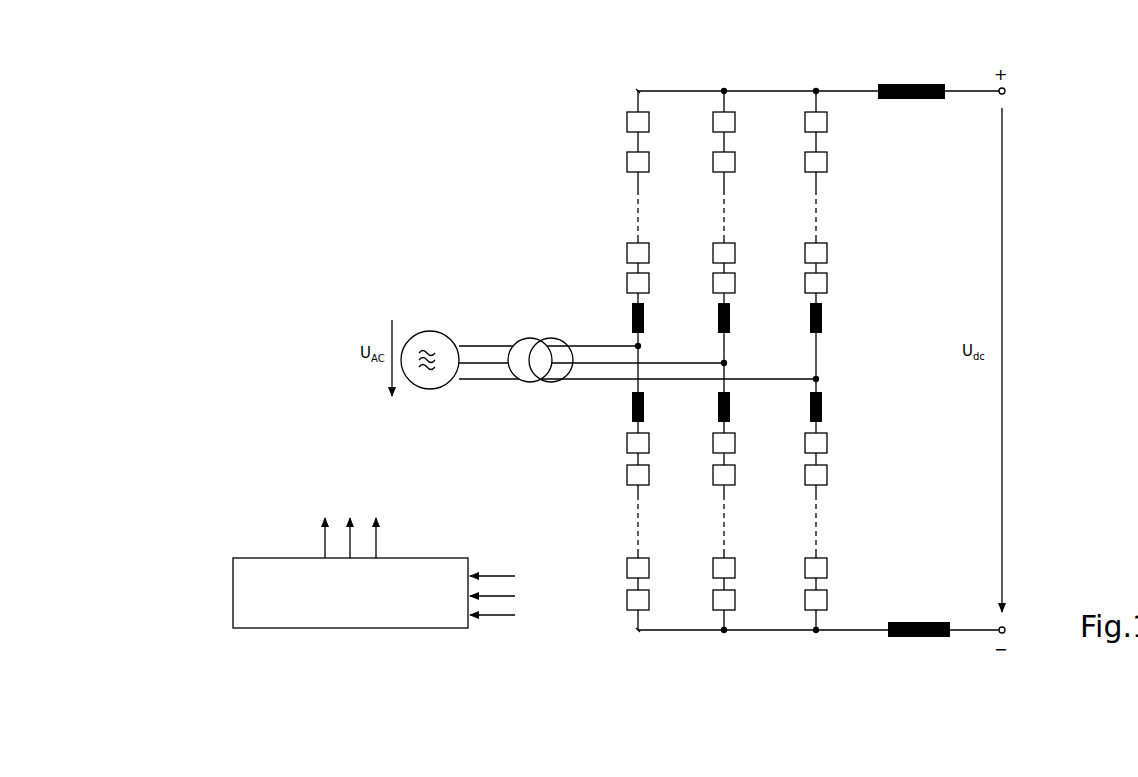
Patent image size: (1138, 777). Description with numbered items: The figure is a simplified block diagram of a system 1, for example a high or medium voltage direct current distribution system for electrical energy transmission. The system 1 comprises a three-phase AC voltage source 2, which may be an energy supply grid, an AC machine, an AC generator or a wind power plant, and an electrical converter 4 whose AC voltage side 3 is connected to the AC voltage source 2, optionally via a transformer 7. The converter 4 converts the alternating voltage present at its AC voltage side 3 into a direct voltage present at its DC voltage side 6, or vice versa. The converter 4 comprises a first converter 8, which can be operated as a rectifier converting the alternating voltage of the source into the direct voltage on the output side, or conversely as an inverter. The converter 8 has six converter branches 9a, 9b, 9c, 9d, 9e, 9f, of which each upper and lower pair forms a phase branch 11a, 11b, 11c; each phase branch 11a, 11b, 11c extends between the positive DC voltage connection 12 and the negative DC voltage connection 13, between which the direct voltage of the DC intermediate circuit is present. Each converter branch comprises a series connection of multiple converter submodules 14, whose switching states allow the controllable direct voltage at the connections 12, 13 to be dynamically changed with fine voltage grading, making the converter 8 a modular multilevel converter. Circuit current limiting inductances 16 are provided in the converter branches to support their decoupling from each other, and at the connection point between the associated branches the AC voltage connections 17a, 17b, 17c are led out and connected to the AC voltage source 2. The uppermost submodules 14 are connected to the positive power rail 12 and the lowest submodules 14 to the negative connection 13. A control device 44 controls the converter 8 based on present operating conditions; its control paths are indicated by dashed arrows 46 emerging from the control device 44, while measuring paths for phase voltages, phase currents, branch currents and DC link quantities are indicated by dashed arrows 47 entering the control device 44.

The system 1 is at (313, 177).
The AC voltage source 2 is at (416, 326).
The AC voltage side 3 is at (574, 284).
The converter 4 is at (598, 93).
The DC voltage side 6 is at (1035, 197).
The transformer 7 is at (530, 386).
The first converter 8 is at (628, 101).
The converter branch 9a is at (641, 100).
The converter branch 9b is at (728, 95).
The converter branch 9c is at (820, 96).
The converter branch 9d is at (727, 631).
The converter branch 9e is at (637, 631).
The converter branch 9f is at (819, 630).
The phase branch 11a is at (624, 229).
The phase branch 11b is at (717, 227).
The phase branch 11c is at (829, 228).
The positive DC voltage connection 12 is at (1008, 91).
The negative DC voltage connection 13 is at (1008, 630).
The converter submodule 14 is at (723, 361).
The circuit current limiting inductance 16 is at (679, 359).
The AC voltage connection 17a is at (642, 348).
The AC voltage connection 17b is at (728, 361).
The AC voltage connection 17c is at (820, 377).
The control device 44 is at (358, 612).
The control paths 46 is at (306, 521).
The measuring paths 47 is at (493, 634).